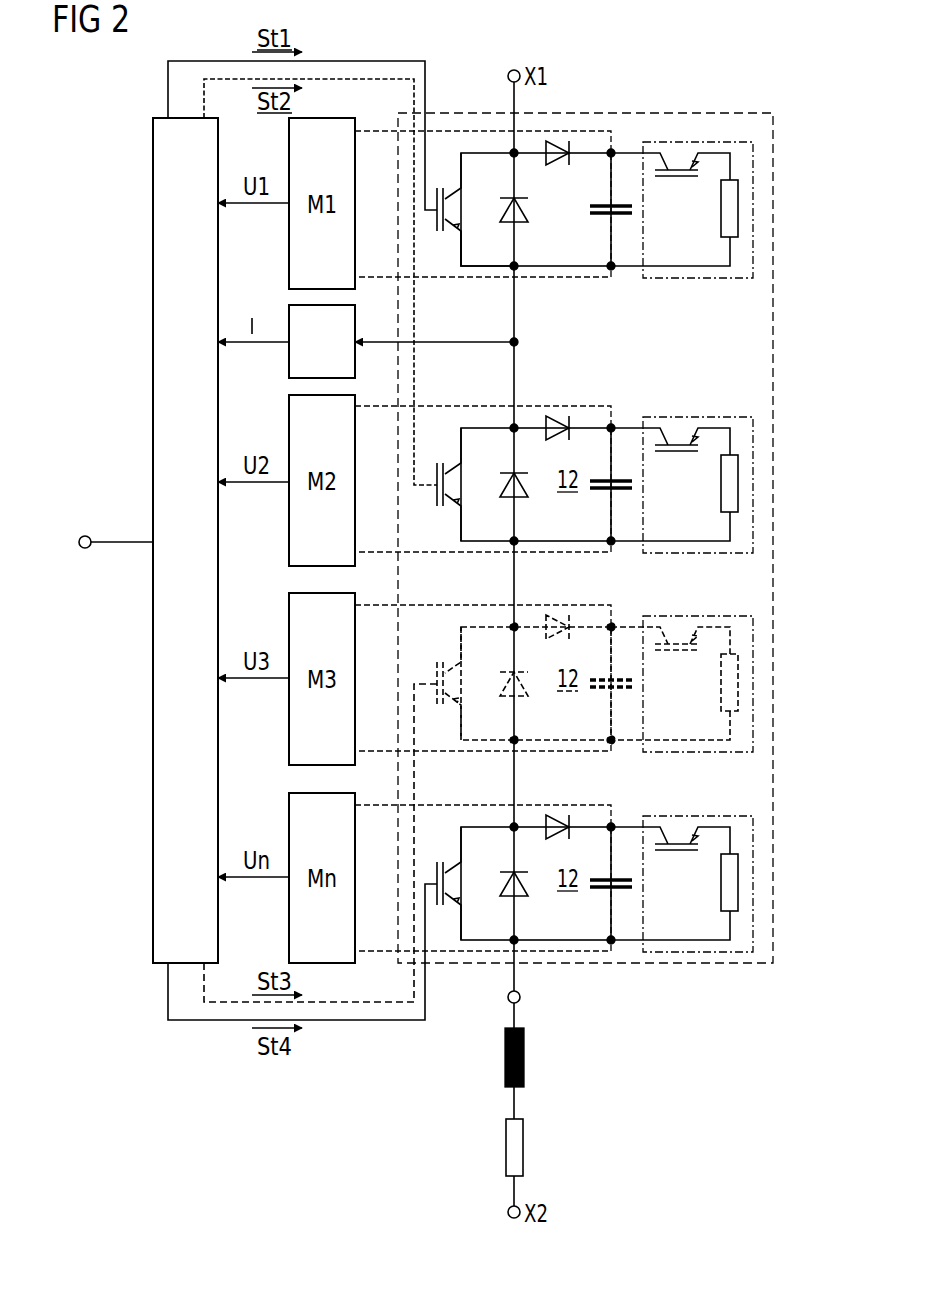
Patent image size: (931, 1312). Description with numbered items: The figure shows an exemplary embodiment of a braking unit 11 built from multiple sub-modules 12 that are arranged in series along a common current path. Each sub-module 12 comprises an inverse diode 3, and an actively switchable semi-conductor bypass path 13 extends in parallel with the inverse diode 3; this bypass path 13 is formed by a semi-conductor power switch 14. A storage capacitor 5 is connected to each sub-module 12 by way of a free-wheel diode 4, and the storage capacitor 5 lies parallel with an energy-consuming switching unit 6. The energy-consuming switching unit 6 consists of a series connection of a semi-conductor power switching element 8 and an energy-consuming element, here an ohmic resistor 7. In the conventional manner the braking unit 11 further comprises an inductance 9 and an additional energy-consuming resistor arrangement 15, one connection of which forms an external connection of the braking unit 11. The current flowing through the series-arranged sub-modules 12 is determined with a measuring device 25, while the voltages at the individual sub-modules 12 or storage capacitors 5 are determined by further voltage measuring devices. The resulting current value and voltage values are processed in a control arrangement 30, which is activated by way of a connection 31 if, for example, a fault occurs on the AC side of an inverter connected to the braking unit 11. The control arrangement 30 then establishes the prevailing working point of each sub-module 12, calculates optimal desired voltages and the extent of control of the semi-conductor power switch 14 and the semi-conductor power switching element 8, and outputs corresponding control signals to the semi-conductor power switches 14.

The inverse diode 3 is at (522, 218).
The free-wheel diode 4 is at (556, 144).
The storage capacitor 5 is at (607, 220).
The energy-consuming switching unit 6 is at (714, 210).
The ohmic resistor 7 is at (721, 218).
The semi-conductor power switching element 8 is at (668, 181).
The inductance 9 is at (525, 1055).
The braking unit 11 is at (774, 330).
The sub-module 12 is at (578, 217).
The actively switchable semi-conductor bypass path 13 is at (470, 266).
The semi-conductor power switch 14 is at (455, 204).
The energy-consuming resistor arrangement 15 is at (524, 1145).
The measuring device 25 is at (336, 355).
The control arrangement 30 is at (153, 384).
The connection 31 is at (87, 551).